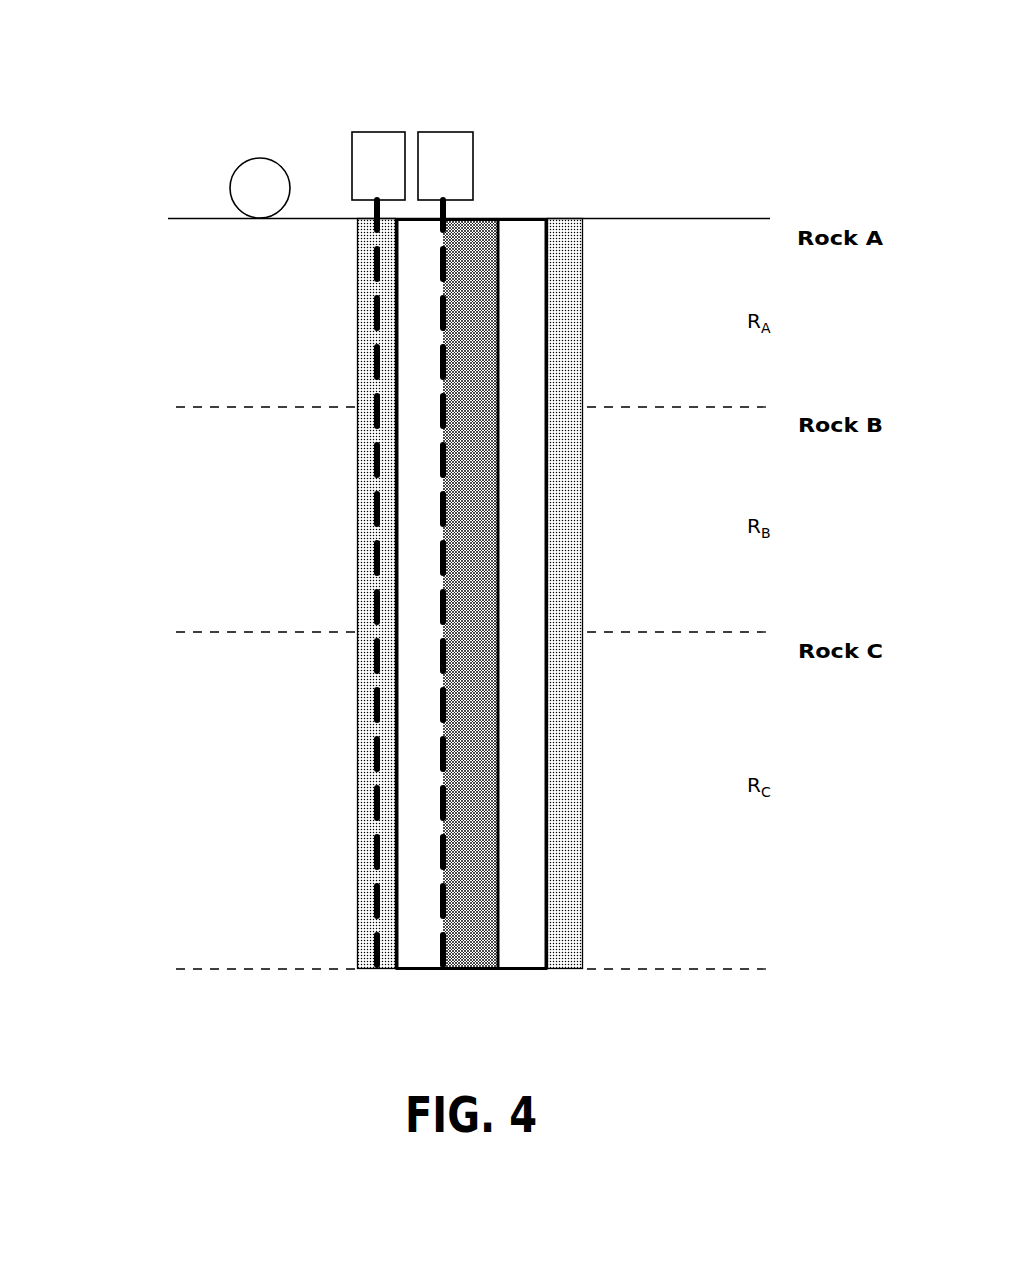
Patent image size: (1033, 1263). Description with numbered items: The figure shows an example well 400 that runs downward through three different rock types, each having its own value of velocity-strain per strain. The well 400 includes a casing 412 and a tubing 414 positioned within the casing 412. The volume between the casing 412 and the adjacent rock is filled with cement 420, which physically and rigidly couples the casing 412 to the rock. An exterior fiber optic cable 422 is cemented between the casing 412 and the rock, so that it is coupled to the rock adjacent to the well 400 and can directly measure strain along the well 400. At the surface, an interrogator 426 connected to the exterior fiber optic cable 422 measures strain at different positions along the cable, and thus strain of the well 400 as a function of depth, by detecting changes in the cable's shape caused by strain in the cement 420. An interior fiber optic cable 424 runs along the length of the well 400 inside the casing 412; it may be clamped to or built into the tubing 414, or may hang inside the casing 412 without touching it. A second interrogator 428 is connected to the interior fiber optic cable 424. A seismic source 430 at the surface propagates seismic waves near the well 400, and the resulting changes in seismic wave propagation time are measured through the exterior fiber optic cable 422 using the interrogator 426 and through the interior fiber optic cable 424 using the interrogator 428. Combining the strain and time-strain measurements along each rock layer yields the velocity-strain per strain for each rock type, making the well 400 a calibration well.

The well 400 is at (517, 40).
The casing 412 is at (547, 673).
The tubing 414 is at (497, 407).
The cement 420 is at (357, 759).
The exterior fiber optic cable 422 is at (377, 352).
The interior fiber optic cable 424 is at (443, 617).
The interrogator 426 is at (352, 133).
The interrogator 428 is at (473, 167).
The seismic source 430 is at (232, 186).